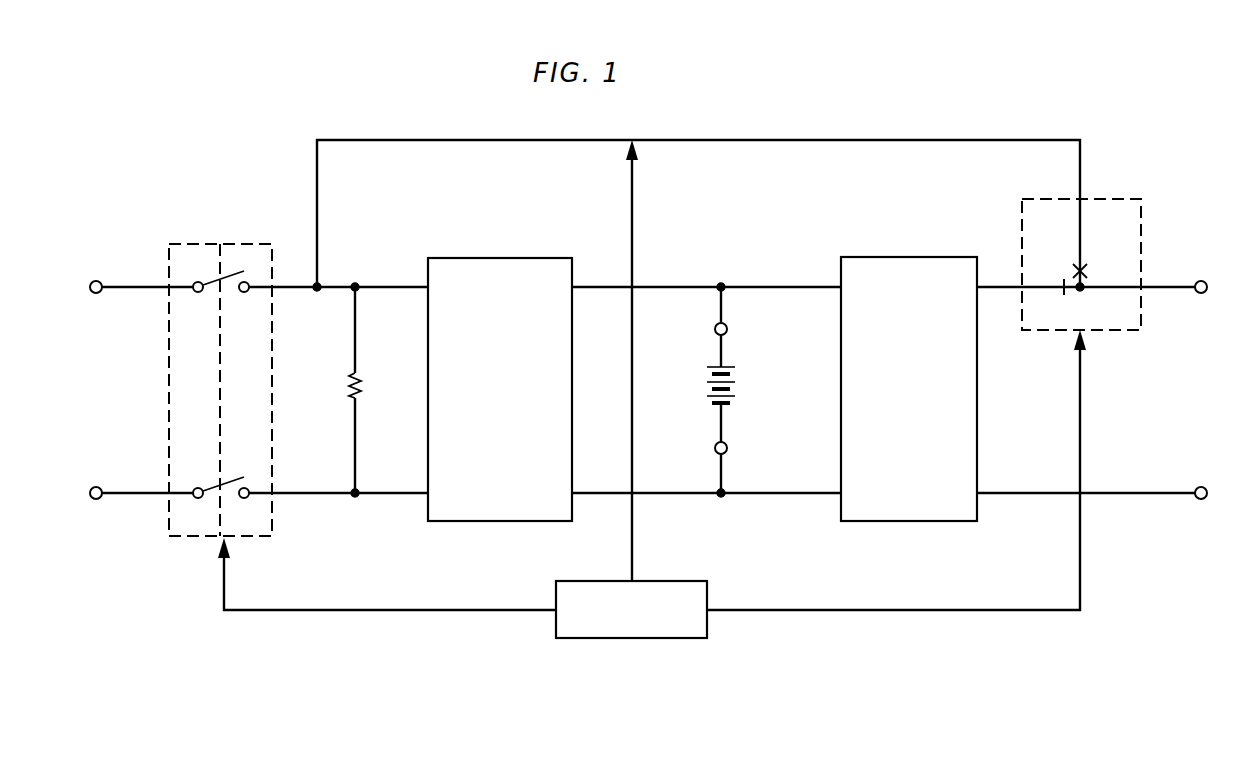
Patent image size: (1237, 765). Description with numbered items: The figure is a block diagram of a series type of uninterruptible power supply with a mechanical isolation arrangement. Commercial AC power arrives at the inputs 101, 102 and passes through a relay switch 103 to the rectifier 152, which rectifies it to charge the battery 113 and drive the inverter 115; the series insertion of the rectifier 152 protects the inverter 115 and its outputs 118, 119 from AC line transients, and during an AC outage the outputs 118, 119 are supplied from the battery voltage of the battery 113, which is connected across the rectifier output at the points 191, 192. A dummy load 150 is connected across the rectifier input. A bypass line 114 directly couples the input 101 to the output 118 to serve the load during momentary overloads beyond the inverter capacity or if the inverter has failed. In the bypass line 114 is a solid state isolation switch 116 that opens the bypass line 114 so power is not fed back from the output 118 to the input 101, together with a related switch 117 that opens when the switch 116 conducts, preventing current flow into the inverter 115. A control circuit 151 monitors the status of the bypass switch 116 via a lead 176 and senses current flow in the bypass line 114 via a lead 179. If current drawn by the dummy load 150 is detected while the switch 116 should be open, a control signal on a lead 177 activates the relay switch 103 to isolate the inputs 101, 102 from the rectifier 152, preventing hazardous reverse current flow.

The input 101 is at (98, 282).
The input 102 is at (98, 488).
The relay switch 103 is at (212, 243).
The battery 113 is at (740, 386).
The bypass line 114 is at (791, 140).
The inverter 115 is at (876, 257).
The isolation switch 116 is at (1090, 266).
The related switch 117 is at (1074, 293).
The output 118 is at (1217, 264).
The output 119 is at (1217, 470).
The dummy load 150 is at (362, 388).
The control circuit 151 is at (592, 581).
The rectifier 152 is at (466, 258).
The lead 176 is at (1078, 556).
The lead 177 is at (404, 607).
The lead 179 is at (637, 203).
The battery connection point 191 is at (729, 330).
The battery connection point 192 is at (730, 449).